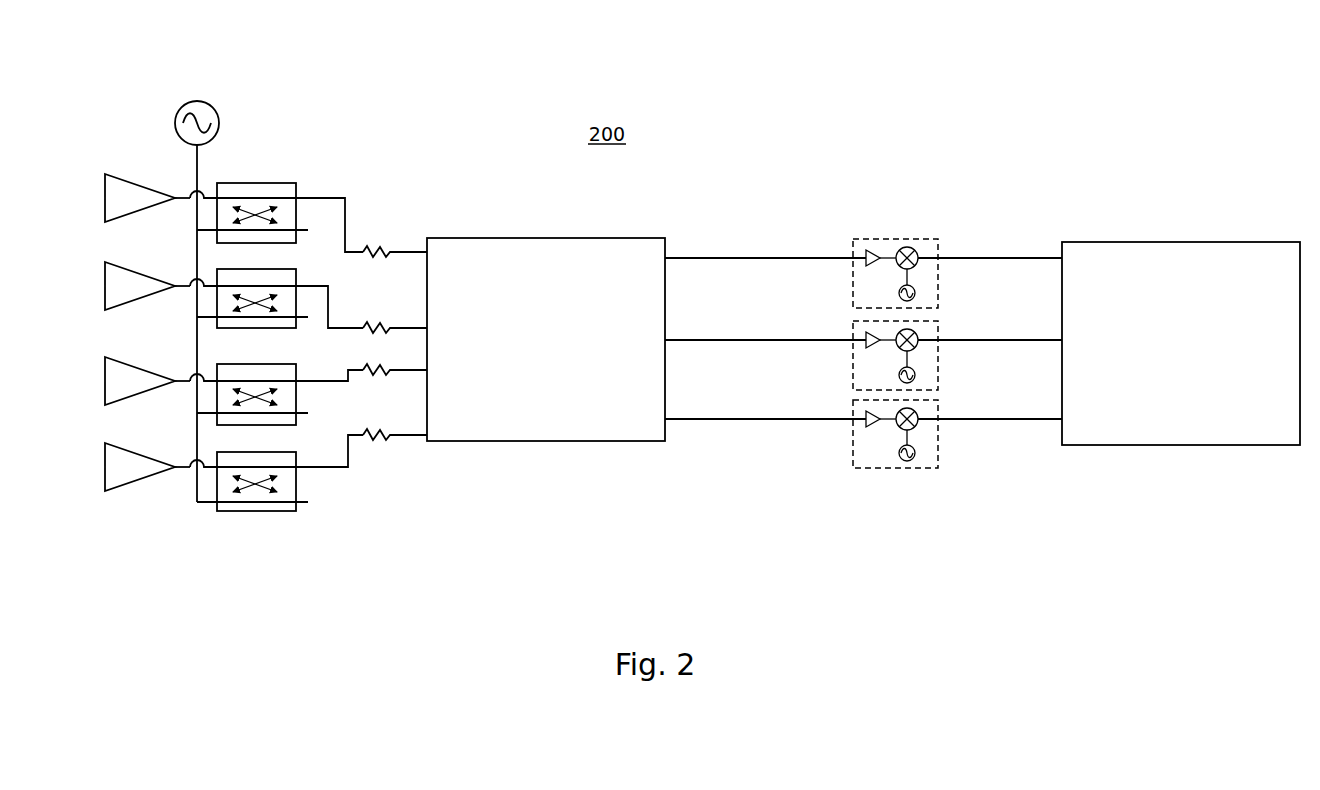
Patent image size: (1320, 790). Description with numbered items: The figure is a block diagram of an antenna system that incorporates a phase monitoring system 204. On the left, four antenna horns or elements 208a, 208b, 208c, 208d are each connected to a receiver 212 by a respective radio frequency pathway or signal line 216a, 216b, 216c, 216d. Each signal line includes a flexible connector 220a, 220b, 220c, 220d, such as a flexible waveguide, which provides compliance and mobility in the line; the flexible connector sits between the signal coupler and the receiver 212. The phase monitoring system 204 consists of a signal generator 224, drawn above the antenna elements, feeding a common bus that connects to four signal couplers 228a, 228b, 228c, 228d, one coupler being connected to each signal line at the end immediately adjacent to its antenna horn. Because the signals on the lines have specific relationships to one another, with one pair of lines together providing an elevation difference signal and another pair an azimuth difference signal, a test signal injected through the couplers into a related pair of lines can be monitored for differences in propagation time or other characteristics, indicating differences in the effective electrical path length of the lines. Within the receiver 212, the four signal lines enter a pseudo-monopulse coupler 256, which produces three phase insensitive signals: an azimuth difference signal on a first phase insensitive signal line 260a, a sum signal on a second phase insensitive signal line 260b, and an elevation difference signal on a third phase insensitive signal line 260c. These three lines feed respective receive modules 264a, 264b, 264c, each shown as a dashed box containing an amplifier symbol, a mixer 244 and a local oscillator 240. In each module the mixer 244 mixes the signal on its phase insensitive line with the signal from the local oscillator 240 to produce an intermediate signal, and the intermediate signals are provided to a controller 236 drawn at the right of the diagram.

The phase monitoring system 204 is at (265, 540).
The antenna horn 208a is at (103, 203).
The antenna horn 208b is at (103, 291).
The antenna horn 208c is at (103, 385).
The antenna horn 208d is at (103, 470).
The receiver 212 is at (954, 384).
The signal line 216a is at (323, 197).
The signal line 216b is at (323, 283).
The signal line 216c is at (322, 379).
The signal line 216d is at (322, 466).
The flexible connector 220a is at (376, 247).
The flexible connector 220b is at (375, 323).
The flexible connector 220c is at (375, 376).
The flexible connector 220d is at (385, 442).
The signal generator 224 is at (178, 106).
The signal coupler 228a is at (227, 182).
The signal coupler 228b is at (215, 270).
The signal coupler 228c is at (215, 364).
The signal coupler 228d is at (297, 512).
The controller 236 is at (1147, 240).
The local oscillator 240 is at (915, 463).
The mixer 244 is at (920, 424).
The pseudo-monopulse coupler 256 is at (531, 236).
The first phase insensitive signal line 260a is at (801, 252).
The second phase insensitive signal line 260b is at (801, 334).
The third phase insensitive signal line 260c is at (801, 413).
The receive module 264a is at (872, 238).
The receive module 264b is at (942, 327).
The receive module 264c is at (957, 440).